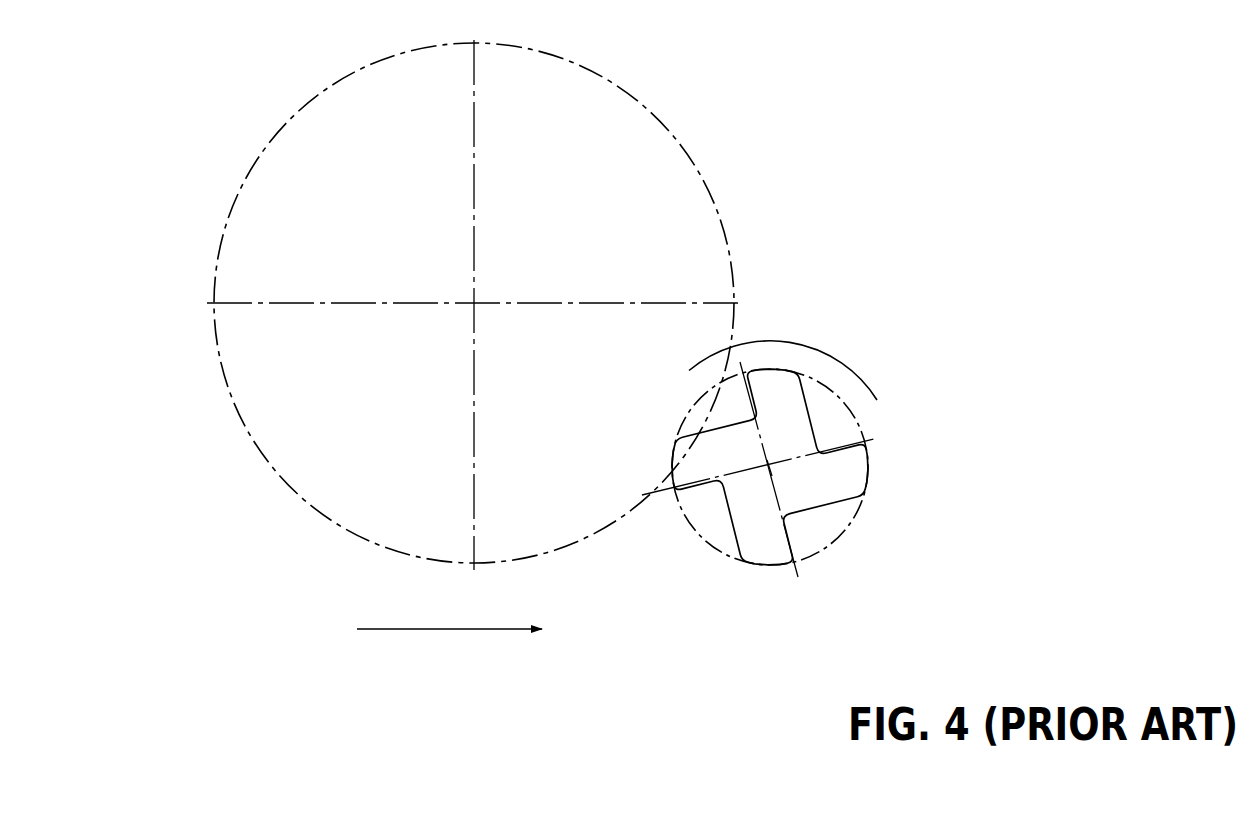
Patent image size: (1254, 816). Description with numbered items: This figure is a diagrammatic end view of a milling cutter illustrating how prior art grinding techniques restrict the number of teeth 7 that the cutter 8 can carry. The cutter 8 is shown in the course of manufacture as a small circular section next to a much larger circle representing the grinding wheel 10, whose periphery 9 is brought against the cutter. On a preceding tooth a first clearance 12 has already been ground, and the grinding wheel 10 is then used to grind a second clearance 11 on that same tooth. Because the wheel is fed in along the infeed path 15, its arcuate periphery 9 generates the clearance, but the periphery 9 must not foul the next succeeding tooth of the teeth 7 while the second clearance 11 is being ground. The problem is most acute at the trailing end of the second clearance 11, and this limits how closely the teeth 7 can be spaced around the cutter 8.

The teeth 7 is at (685, 482).
The cutter 8 is at (833, 505).
The periphery 9 is at (725, 240).
The grinding wheel 10 is at (325, 518).
The second clearance 11 is at (685, 460).
The first clearance 12 is at (676, 489).
The path 15 is at (437, 631).